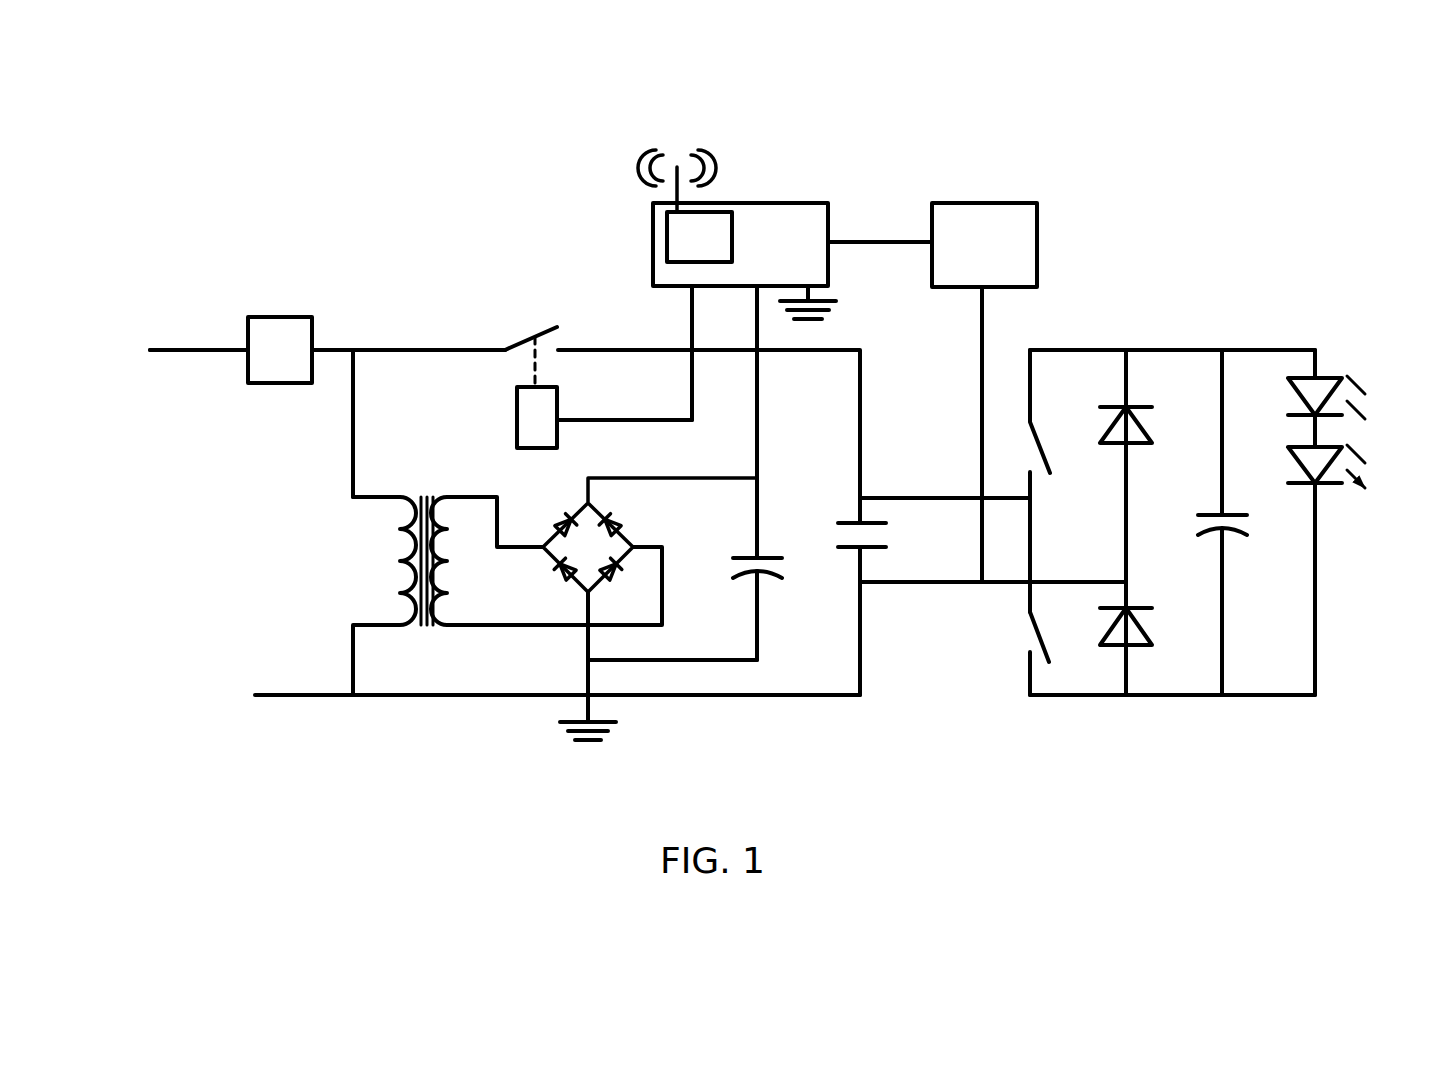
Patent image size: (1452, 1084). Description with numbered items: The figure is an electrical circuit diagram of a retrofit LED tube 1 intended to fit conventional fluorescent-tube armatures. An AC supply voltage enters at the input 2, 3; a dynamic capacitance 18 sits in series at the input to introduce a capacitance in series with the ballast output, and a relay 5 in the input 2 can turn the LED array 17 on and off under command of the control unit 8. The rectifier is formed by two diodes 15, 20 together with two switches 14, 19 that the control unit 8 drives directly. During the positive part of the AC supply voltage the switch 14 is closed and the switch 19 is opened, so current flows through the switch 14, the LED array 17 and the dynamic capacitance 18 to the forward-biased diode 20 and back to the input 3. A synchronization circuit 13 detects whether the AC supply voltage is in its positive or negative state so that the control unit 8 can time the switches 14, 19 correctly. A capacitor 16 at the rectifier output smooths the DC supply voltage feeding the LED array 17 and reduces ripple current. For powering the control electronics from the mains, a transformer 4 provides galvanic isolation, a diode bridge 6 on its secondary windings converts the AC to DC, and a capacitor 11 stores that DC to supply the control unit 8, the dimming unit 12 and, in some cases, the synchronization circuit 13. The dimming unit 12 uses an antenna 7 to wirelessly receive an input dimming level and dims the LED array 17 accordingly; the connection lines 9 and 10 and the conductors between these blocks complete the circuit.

The retrofit LED tube 1 is at (1272, 202).
The AC supply voltage input 2 is at (333, 350).
The AC supply voltage input 3 is at (278, 693).
The transformer 4 is at (403, 562).
The relay 5 is at (513, 395).
The diode bridge 6 is at (545, 598).
The antenna 7 is at (640, 170).
The control unit 8 is at (653, 227).
The control line 9 is at (688, 323).
The supply line 10 is at (666, 660).
The capacitor 11 is at (770, 574).
The dimming unit 12 is at (733, 222).
The synchronization circuit 13 is at (957, 227).
The switch 14 is at (1038, 426).
The diode 15 is at (1130, 407).
The capacitor 16 is at (1232, 515).
The LED array 17 is at (1348, 358).
The dynamic capacitance 18 is at (267, 317).
The switch 19 is at (1026, 637).
The diode 20 is at (1135, 647).